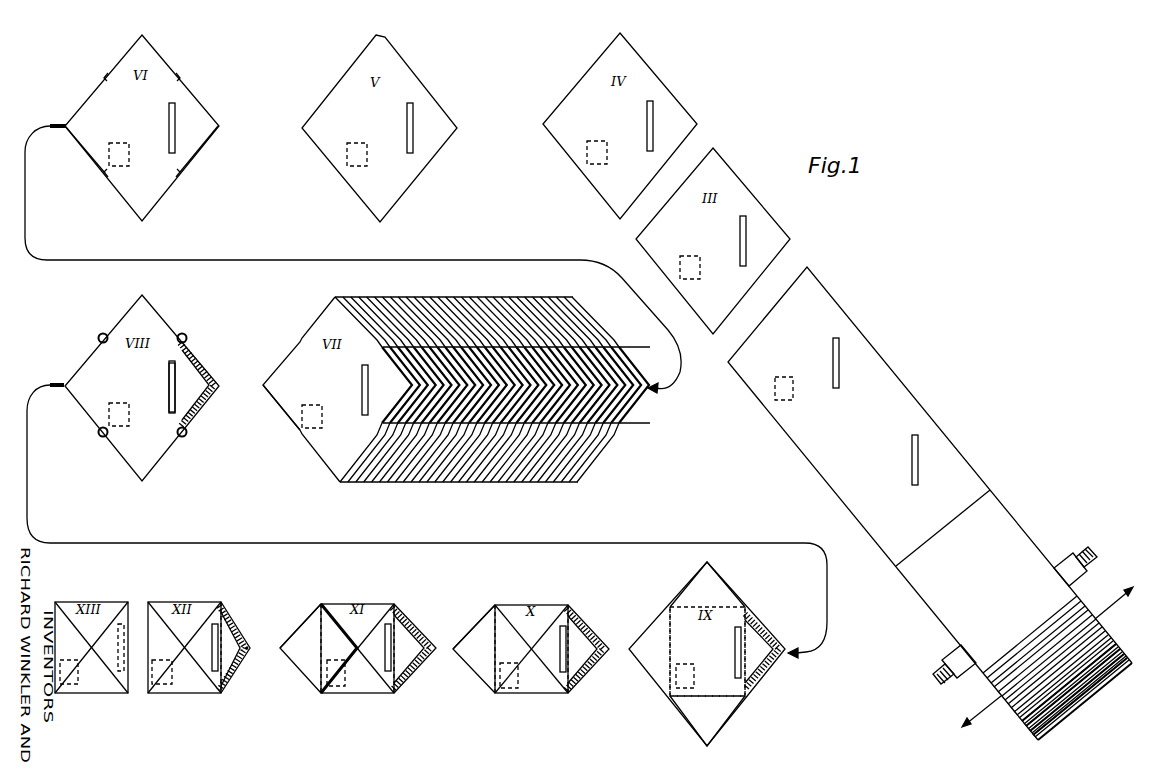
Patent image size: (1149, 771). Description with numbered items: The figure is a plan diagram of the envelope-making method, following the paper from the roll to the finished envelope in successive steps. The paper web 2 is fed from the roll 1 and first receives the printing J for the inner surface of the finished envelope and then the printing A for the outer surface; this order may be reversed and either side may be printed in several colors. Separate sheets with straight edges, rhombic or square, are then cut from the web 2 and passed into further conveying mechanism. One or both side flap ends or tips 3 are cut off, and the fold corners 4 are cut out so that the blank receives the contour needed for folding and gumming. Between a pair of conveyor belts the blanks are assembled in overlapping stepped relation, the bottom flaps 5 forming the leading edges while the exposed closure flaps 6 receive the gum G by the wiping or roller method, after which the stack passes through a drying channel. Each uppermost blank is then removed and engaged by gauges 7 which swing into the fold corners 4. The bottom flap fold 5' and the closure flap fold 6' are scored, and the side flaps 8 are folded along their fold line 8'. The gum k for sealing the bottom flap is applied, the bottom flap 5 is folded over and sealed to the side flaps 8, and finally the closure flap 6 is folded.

The paper roll 1 is at (1107, 649).
The paper web 2 is at (838, 492).
The side flap ends or tips 3 is at (384, 37).
The fold corners 4 is at (104, 78).
The bottom flap 5 is at (276, 387).
The bottom flap fold 5' is at (487, 650).
The closure flap 6 is at (415, 408).
The closure flap fold 6' is at (492, 649).
The gauges 7 is at (177, 337).
The side flaps 8 is at (702, 654).
The end fold line 8' is at (707, 709).
The printing for the outer surface A is at (434, 532).
The printing for the inner surface J is at (549, 508).
The gum for the closure flaps G is at (624, 406).
The gum for sealing the bottom flap k is at (352, 645).